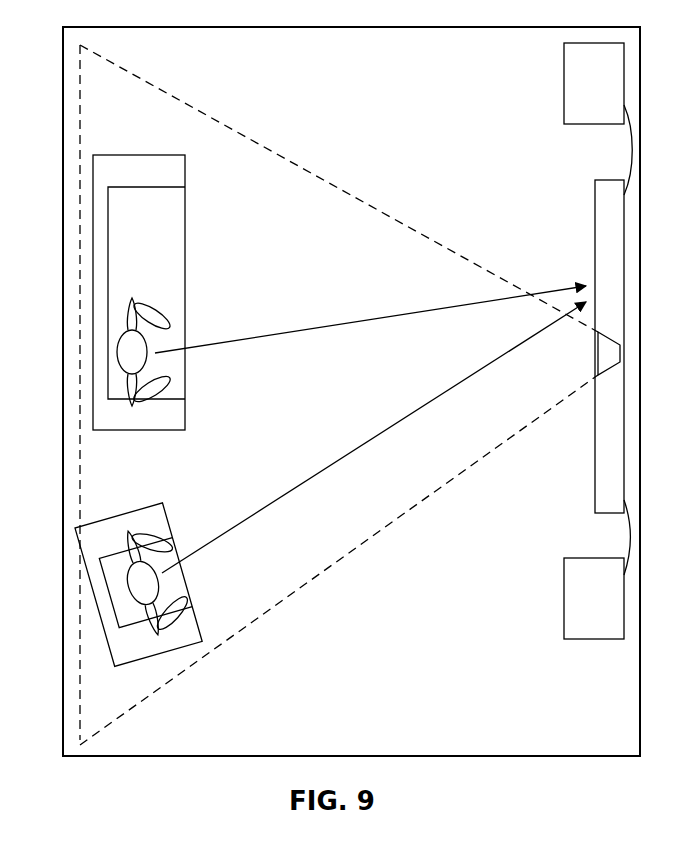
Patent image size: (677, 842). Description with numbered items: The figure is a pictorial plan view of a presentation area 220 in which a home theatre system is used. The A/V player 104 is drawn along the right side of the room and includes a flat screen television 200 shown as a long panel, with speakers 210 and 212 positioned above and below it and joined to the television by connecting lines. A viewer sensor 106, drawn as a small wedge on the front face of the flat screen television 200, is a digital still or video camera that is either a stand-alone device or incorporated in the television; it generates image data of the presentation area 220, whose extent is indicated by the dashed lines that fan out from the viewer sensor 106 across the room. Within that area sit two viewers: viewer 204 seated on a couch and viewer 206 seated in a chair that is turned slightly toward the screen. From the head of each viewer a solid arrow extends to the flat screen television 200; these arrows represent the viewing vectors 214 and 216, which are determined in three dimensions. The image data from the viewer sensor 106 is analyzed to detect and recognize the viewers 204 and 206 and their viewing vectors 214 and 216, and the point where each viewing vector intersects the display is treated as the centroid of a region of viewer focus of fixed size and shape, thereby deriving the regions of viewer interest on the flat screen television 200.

The A/V player 104 is at (535, 333).
The viewer sensor 106 is at (610, 325).
The flat screen television 200 is at (614, 180).
The viewer 204 is at (159, 299).
The viewer 206 is at (148, 523).
The speaker 210 is at (598, 119).
The speaker 212 is at (597, 569).
The viewing vector 214 is at (370, 319).
The viewing vector 216 is at (374, 437).
The presentation area 220 is at (264, 146).